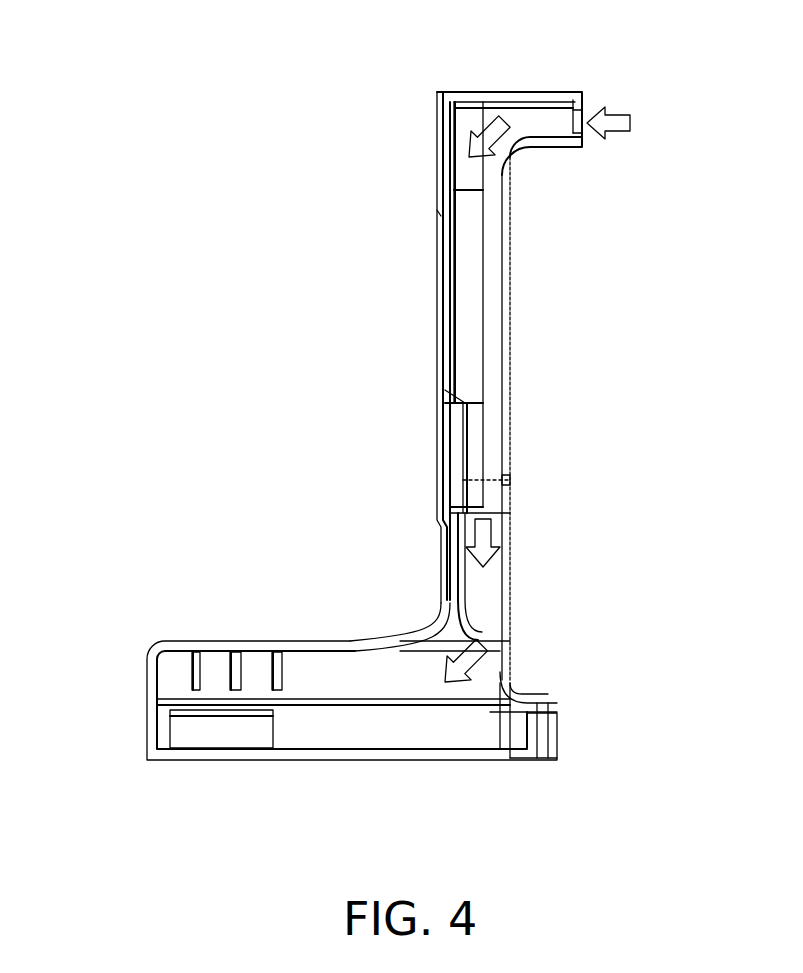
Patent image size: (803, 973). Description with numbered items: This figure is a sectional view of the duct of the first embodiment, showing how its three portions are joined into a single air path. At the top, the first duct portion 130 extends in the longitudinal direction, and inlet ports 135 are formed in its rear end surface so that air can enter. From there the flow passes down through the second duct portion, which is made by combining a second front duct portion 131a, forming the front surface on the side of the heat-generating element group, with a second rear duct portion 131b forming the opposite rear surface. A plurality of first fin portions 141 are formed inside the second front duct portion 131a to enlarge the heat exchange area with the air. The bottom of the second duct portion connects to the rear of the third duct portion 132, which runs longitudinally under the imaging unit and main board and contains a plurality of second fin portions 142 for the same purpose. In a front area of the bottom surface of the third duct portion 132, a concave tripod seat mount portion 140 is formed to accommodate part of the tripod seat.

The first duct portion 130 is at (468, 92).
The inlet ports 135 is at (583, 110).
The first fin portions 141 is at (470, 285).
The second front duct portion 131a is at (438, 322).
The second rear duct portion 131b is at (508, 343).
The third duct portion 132 is at (293, 638).
The second fin portions 142 is at (193, 676).
The tripod seat mount portion 140 is at (207, 730).